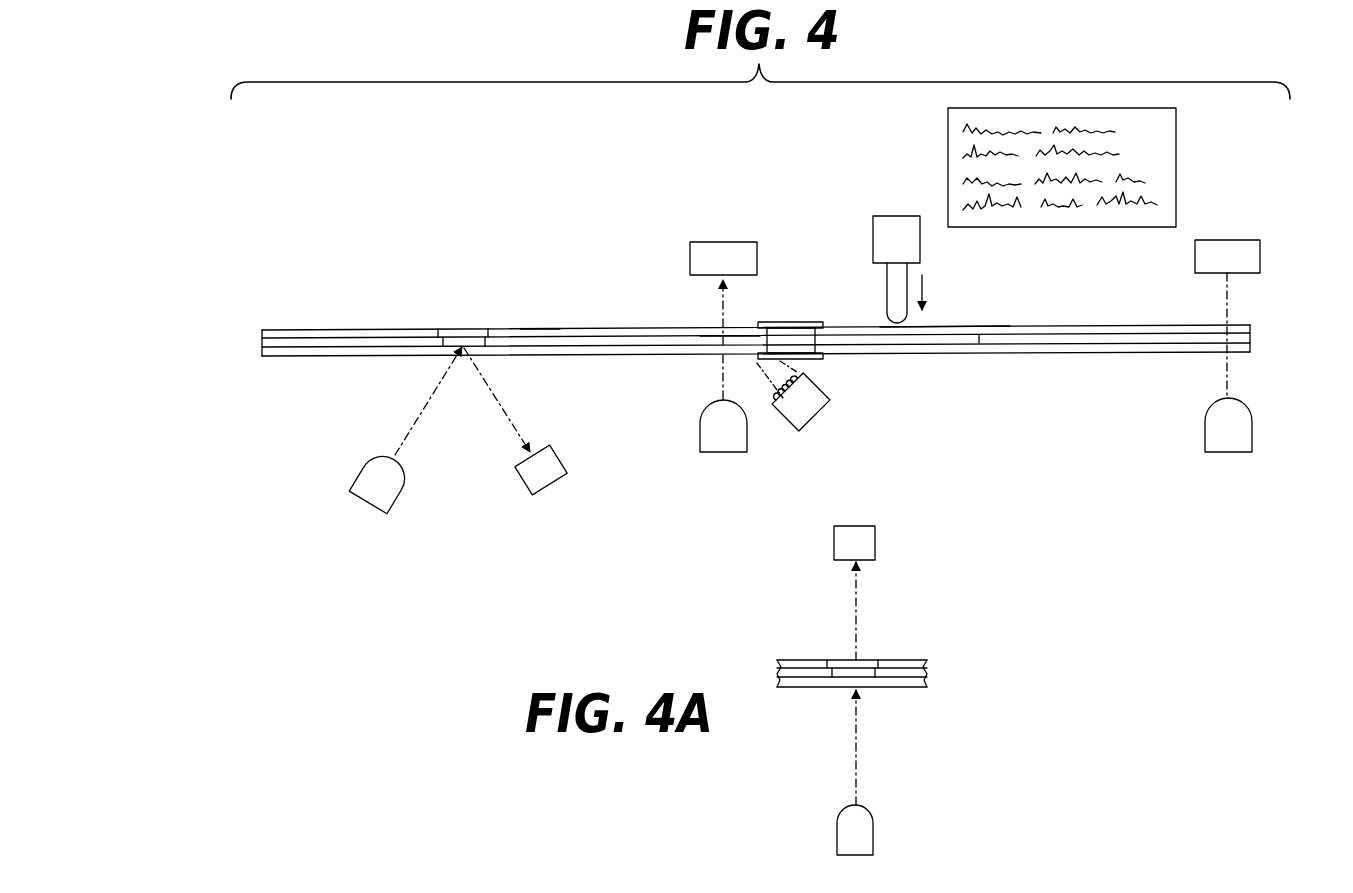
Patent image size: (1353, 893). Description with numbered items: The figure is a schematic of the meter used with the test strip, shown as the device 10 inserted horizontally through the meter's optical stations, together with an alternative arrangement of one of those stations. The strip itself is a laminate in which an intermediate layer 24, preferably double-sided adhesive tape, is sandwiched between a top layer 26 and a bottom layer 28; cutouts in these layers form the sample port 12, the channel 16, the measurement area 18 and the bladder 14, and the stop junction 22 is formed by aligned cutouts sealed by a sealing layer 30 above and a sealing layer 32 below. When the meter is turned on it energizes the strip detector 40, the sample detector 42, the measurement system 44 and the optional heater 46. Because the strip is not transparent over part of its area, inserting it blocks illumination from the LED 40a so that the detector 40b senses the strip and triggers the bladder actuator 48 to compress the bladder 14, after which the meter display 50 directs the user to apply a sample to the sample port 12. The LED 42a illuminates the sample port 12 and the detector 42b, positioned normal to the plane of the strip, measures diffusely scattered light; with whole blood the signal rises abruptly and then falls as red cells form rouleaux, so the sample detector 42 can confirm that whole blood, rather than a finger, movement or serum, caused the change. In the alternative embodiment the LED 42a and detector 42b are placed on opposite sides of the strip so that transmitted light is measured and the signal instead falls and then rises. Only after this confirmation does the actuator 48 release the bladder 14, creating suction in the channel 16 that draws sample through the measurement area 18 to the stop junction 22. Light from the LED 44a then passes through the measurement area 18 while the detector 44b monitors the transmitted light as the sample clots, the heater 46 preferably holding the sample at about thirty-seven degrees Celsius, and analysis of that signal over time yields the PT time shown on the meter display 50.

In FIG. 4, the device 10 is at (705, 316).
In FIG. 4A, the device 10 is at (868, 688).
In FIG. 4, the sample port 12 is at (463, 340).
In FIG. 4A, the sample port 12 is at (868, 658).
In FIG. 4, the bladder 14 is at (900, 335).
In FIG. 4, the channel 16 is at (547, 340).
In FIG. 4, the measurement area 18 is at (727, 338).
In FIG. 4, the stop junction 22 is at (802, 340).
In FIG. 4, the intermediate layer 24 is at (262, 342).
In FIG. 4, the top layer 26 is at (262, 334).
In FIG. 4, the bottom layer 28 is at (262, 351).
In FIG. 4, the sealing layer 30 is at (817, 323).
In FIG. 4, the sealing layer 32 is at (823, 360).
In FIG. 4, the strip detector 40 is at (1214, 361).
In FIG. 4, the LED 40a is at (1210, 438).
In FIG. 4, the detector 40b is at (1203, 255).
In FIG. 4, the sample detector 42 is at (464, 462).
In FIG. 4, the LED 42a is at (372, 482).
In FIG. 4A, the LED 42a is at (867, 828).
In FIG. 4, the detector 42b is at (566, 437).
In FIG. 4A, the detector 42b is at (872, 548).
In FIG. 4, the measurement system 44 is at (710, 349).
In FIG. 4, the LED 44a is at (737, 447).
In FIG. 4, the detector 44b is at (728, 242).
In FIG. 4, the heater 46 is at (820, 408).
In FIG. 4, the bladder actuator 48 is at (895, 222).
In FIG. 4, the meter display 50 is at (1175, 167).